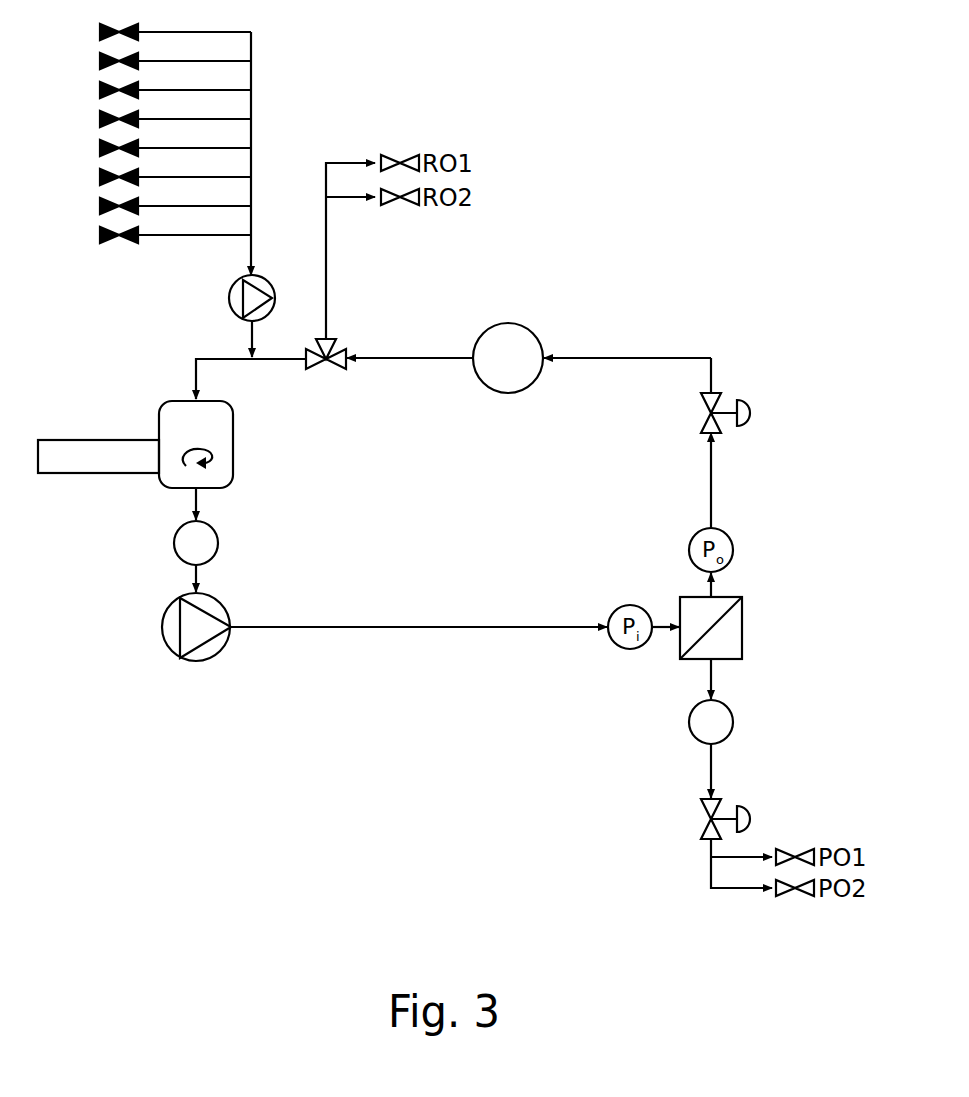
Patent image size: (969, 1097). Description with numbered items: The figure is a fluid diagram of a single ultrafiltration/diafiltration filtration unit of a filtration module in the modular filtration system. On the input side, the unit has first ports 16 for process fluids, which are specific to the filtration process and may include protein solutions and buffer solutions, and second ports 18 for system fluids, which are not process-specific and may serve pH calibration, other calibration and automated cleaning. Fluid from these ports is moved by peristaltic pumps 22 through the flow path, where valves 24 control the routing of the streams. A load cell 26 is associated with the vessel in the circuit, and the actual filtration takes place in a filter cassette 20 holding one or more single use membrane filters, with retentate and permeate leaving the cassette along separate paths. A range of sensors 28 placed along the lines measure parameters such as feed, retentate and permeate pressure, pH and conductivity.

The first ports 16 is at (70, 20).
The second ports 18 is at (70, 137).
The filter cassette 20 is at (742, 627).
The peristaltic pumps 22 is at (229, 297).
The valves 24 is at (752, 413).
The load cell 26 is at (113, 440).
The sensors 28 is at (508, 323).